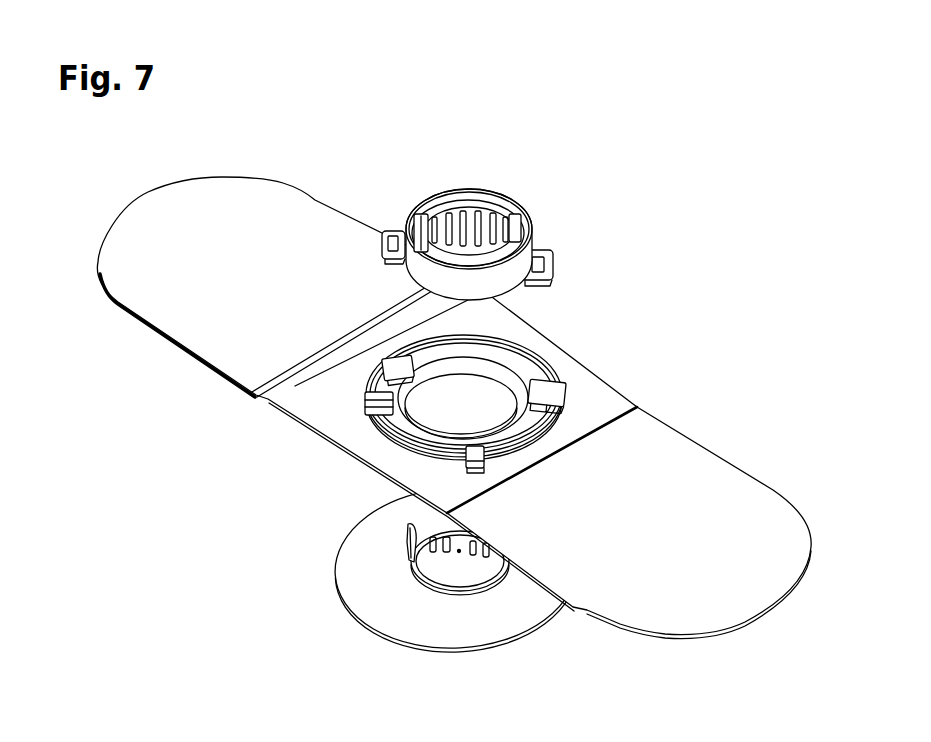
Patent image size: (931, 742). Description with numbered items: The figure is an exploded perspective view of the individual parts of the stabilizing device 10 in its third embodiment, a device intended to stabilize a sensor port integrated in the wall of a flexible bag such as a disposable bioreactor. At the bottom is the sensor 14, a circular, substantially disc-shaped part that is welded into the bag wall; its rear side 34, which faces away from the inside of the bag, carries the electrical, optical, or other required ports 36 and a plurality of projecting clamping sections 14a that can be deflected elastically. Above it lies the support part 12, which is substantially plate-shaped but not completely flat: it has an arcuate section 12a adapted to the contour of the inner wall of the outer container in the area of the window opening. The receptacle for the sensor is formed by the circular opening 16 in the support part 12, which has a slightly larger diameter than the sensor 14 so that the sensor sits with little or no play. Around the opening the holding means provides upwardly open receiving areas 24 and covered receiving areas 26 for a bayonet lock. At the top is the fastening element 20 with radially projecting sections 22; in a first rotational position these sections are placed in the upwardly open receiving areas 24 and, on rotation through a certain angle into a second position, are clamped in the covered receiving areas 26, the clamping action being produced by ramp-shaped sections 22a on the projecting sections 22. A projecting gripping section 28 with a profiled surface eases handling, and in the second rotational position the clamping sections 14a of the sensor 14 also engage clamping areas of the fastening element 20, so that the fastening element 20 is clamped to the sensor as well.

The stabilizing device 10 is at (550, 182).
The support part 12 is at (735, 437).
The arcuate section 12a is at (298, 381).
The sensor 14 is at (497, 592).
The clamping section 14a is at (408, 533).
The opening 16 is at (458, 378).
The fastening element 20 is at (514, 192).
The radially projecting section 22 is at (536, 252).
The ramp-shaped section 22a is at (398, 232).
The upwardly open receiving area 24 is at (527, 415).
The covered receiving area 26 is at (404, 353).
The gripping section 28 is at (458, 214).
The rear side 34 is at (437, 569).
The port 36 is at (457, 556).